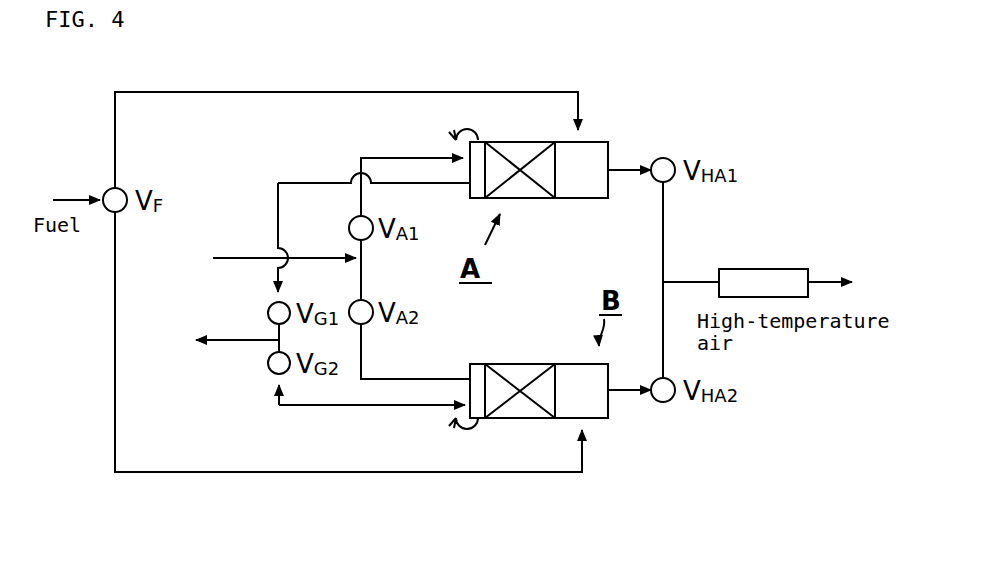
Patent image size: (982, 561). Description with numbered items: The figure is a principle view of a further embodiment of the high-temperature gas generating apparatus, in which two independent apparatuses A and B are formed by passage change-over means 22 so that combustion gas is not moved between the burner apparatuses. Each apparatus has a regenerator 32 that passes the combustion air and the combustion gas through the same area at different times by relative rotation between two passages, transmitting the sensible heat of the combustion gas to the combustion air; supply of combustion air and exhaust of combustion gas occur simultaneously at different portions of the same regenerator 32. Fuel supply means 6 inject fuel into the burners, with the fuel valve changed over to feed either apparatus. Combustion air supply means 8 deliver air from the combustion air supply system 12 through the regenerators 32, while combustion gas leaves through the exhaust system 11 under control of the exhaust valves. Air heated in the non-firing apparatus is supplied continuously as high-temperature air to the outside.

The fuel supply means 6 is at (570, 89).
The combustion air supply means 8 is at (403, 157).
The exhaust system 11 is at (250, 336).
The combustion air supply system 12 is at (232, 263).
The passage change-over means 22 is at (466, 195).
The regenerator 32 is at (517, 150).